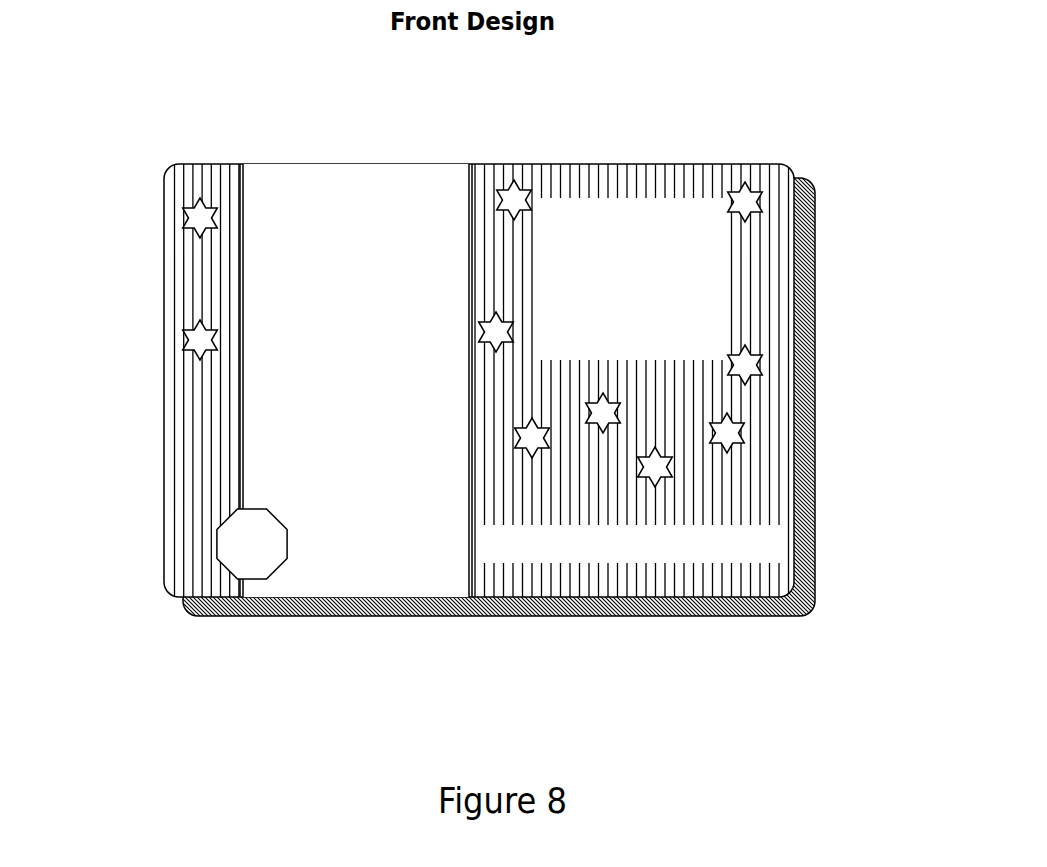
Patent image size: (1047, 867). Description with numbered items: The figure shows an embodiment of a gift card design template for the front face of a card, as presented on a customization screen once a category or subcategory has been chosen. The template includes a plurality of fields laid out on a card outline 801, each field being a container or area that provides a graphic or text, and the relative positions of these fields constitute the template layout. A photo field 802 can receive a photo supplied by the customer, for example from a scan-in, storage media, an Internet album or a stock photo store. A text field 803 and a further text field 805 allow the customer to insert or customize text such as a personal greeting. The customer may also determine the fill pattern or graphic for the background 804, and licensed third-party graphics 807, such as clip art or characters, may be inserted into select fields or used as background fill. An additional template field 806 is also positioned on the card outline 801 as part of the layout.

The card outline 801 is at (146, 364).
The photo field 802 is at (358, 255).
The text field 803 is at (637, 237).
The background 804 is at (744, 488).
The text field 805 is at (727, 542).
The template field 806 is at (238, 580).
The graphics 807 is at (200, 338).